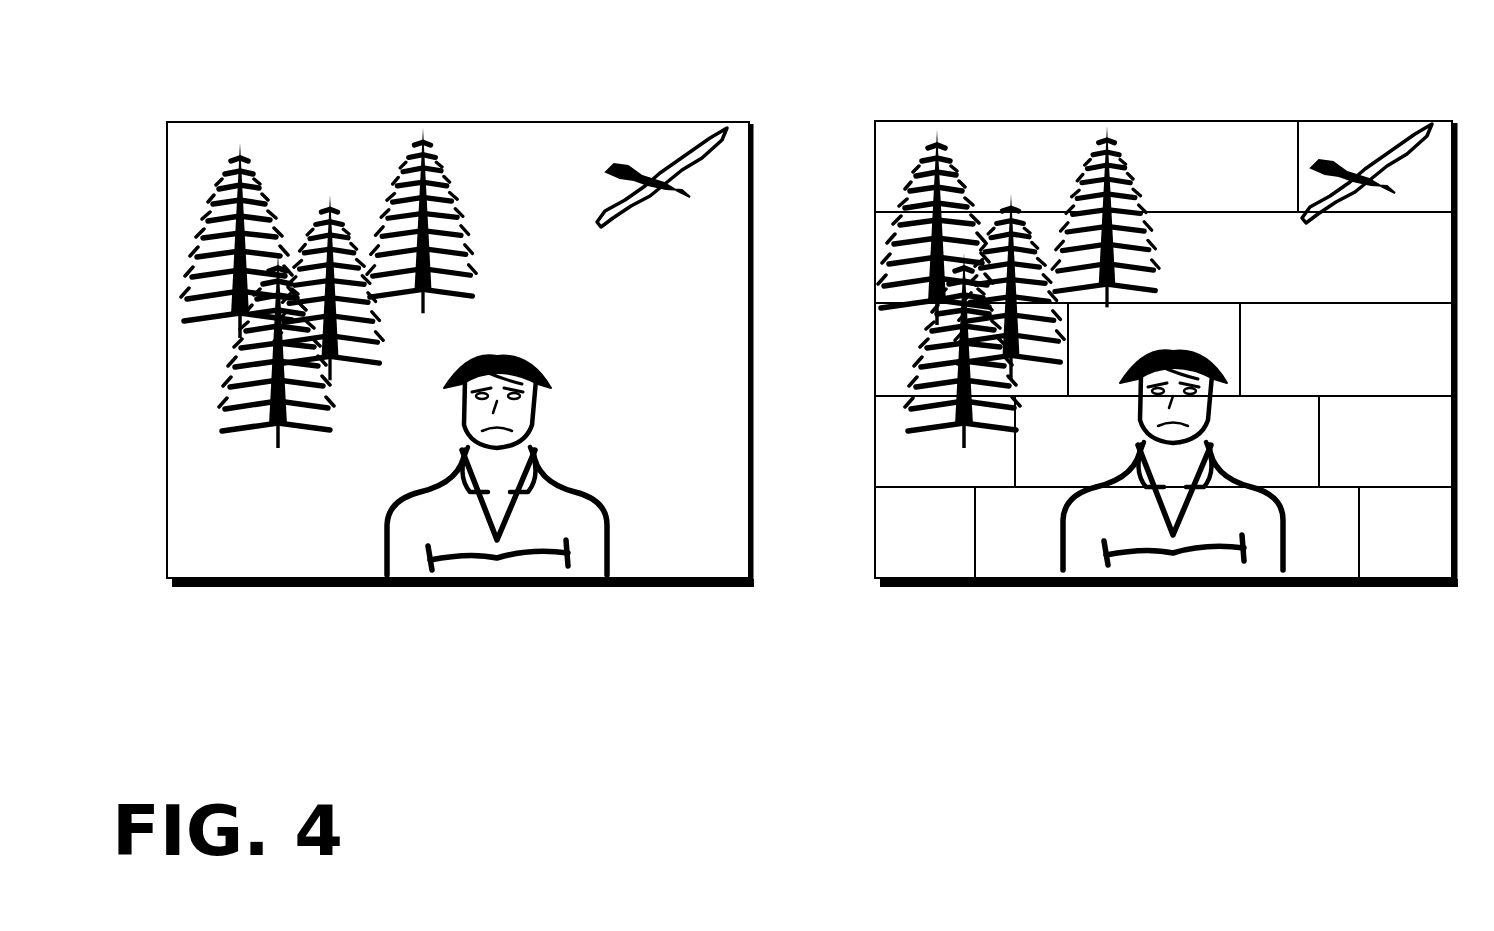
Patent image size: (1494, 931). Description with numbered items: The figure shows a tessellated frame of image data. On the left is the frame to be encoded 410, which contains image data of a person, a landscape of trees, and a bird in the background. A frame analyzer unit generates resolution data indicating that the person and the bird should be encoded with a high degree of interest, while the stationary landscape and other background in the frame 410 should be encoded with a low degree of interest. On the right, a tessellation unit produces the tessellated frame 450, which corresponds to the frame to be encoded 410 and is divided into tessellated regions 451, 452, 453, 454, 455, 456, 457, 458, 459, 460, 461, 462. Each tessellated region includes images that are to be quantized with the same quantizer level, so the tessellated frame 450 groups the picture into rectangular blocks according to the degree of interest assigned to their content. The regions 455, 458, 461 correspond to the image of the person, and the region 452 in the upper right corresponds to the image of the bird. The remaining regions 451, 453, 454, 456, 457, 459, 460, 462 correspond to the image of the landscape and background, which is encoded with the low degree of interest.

The frame to be encoded 410 is at (511, 90).
The tessellated frame 450 is at (1213, 90).
The tessellated region 451 is at (1285, 206).
The tessellated region 452 is at (1445, 206).
The tessellated region 453 is at (1445, 294).
The tessellated region 454 is at (1061, 382).
The tessellated region 455 is at (1232, 347).
The tessellated region 456 is at (1445, 386).
The tessellated region 457 is at (1006, 474).
The tessellated region 458 is at (1313, 474).
The tessellated region 459 is at (1445, 474).
The tessellated region 460 is at (966, 567).
The tessellated region 461 is at (1340, 571).
The tessellated region 462 is at (1445, 571).